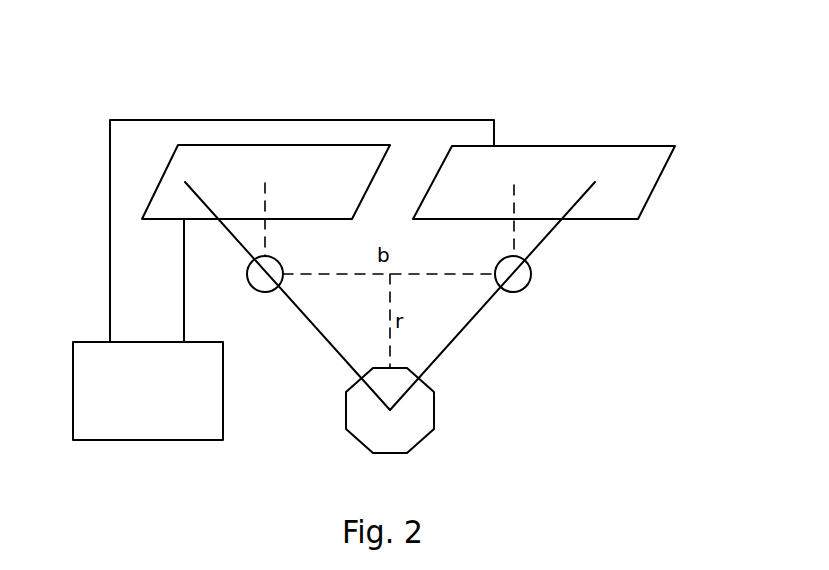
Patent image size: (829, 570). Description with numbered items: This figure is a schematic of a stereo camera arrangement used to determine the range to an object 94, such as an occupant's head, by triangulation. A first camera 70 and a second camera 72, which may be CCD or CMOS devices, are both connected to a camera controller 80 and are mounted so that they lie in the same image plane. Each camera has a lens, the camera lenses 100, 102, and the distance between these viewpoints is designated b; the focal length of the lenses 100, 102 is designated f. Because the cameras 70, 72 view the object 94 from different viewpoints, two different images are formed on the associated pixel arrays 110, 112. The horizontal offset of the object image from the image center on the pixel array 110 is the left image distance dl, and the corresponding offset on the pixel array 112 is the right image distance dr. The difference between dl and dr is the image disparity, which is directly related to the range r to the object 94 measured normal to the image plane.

The first camera 70 is at (200, 88).
The second camera 72 is at (528, 85).
The pixel array 110 is at (161, 180).
The pixel array 112 is at (545, 146).
The camera lens 100 is at (264, 292).
The camera lens 102 is at (521, 289).
The object 94 is at (432, 392).
The camera controller 80 is at (226, 381).